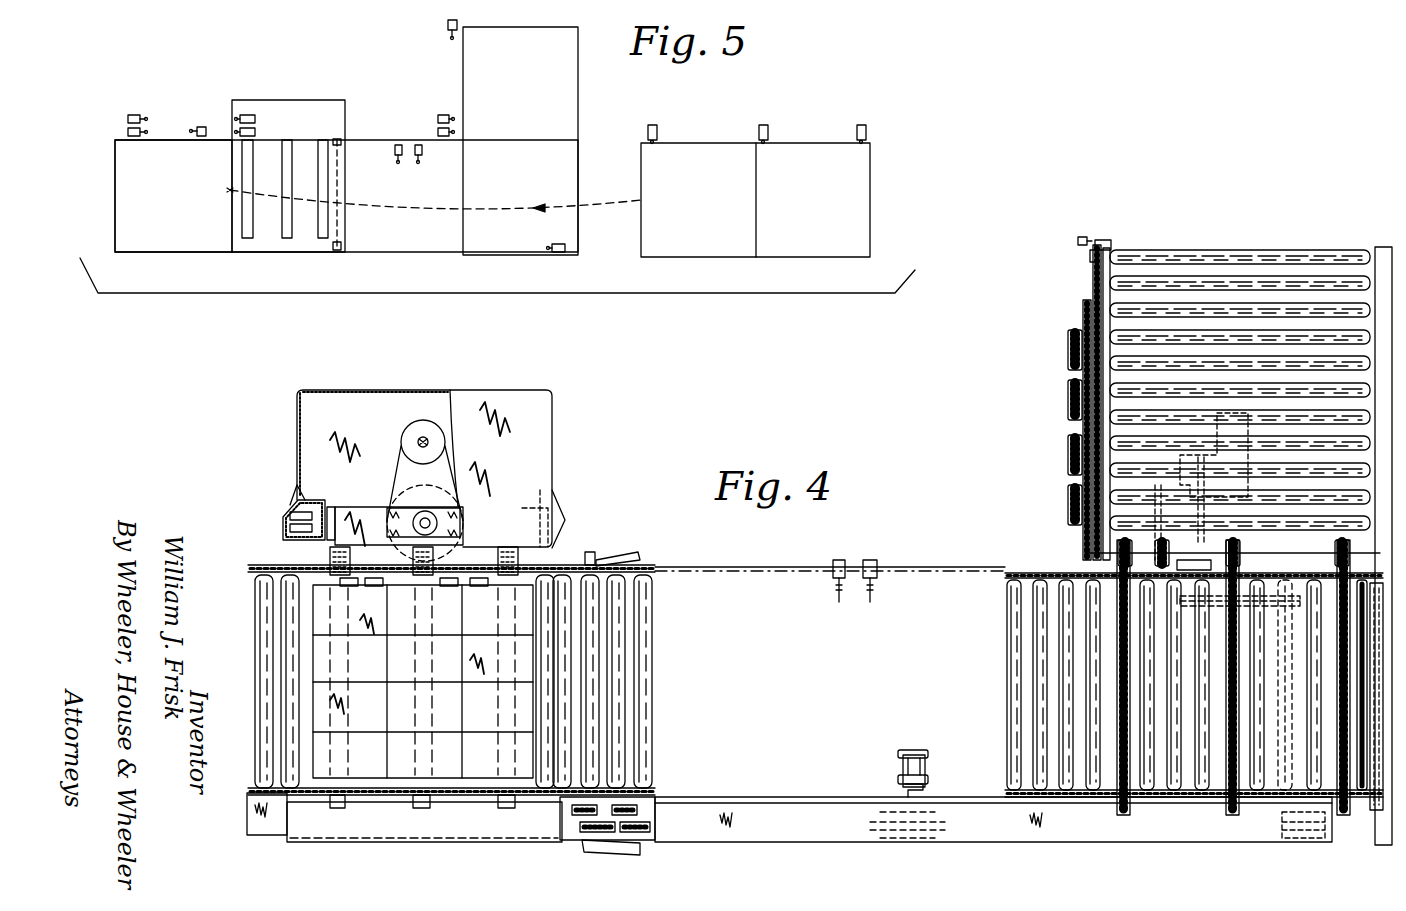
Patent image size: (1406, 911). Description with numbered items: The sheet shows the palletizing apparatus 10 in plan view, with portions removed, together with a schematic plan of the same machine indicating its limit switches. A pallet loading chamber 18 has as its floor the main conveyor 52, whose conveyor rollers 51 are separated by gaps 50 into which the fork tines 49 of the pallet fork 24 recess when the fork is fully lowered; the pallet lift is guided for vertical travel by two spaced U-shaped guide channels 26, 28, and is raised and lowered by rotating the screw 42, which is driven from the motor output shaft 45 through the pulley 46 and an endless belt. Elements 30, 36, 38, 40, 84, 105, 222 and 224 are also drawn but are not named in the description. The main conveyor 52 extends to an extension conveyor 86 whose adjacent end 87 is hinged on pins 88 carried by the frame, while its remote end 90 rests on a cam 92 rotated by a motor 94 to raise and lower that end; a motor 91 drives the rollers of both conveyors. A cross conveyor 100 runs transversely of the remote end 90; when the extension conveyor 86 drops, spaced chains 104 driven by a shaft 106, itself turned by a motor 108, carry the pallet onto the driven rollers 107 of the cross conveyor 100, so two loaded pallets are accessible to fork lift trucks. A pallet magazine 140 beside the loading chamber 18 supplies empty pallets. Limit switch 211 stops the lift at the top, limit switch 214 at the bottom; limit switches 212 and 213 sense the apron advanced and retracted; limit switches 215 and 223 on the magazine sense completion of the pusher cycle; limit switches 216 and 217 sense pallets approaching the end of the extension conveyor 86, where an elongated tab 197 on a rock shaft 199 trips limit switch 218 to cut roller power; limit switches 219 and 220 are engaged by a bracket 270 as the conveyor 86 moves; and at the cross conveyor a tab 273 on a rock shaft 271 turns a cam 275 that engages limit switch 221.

In FIG. 4, the palletizing apparatus 10 is at (262, 458).
In FIG. 5, the pallet loading chamber 18 is at (275, 238).
In FIG. 4, the pallet fork 24 is at (320, 700).
In FIG. 4, the U-shaped guide channel 26 is at (312, 545).
In FIG. 4, the U-shaped guide channel 28 is at (553, 490).
In FIG. 4, the hopper inlet 30 is at (304, 490).
In FIG. 4, the hopper 36 is at (300, 532).
In FIG. 4, the gate block 38 is at (331, 507).
In FIG. 4, the hopper outlet 40 is at (300, 507).
In FIG. 4, the screw 42 is at (425, 510).
In FIG. 4, the output shaft 45 is at (418, 442).
In FIG. 4, the pulley 46 is at (420, 428).
In FIG. 5, the fork tines 49 is at (248, 238).
In FIG. 4, the fork tines 49 is at (337, 808).
In FIG. 4, the gaps 50 is at (495, 588).
In FIG. 4, the conveyor rollers 51 is at (288, 605).
In FIG. 4, the main conveyor 52 is at (280, 639).
In FIG. 4, the stop plate 84 is at (612, 562).
In FIG. 5, the extension conveyor 86 is at (455, 238).
In FIG. 4, the extension conveyor 86 is at (632, 592).
In FIG. 4, the adjacent end 87 is at (595, 626).
In FIG. 4, the pins 88 is at (591, 550).
In FIG. 4, the remote end 90 is at (1303, 825).
In FIG. 4, the motor 91 is at (920, 751).
In FIG. 4, the cam 92 is at (1290, 576).
In FIG. 4, the motor 94 is at (1190, 560).
In FIG. 5, the cross conveyor 100 is at (557, 38).
In FIG. 4, the cross conveyor 100 is at (1213, 270).
In FIG. 4, the belts or chains 104 is at (1080, 574).
In FIG. 4, the lift chain 105 is at (1070, 458).
In FIG. 4, the shaft 106 is at (1085, 548).
In FIG. 4, the rollers 107 is at (1070, 496).
In FIG. 4, the motor 108 is at (1231, 413).
In FIG. 5, the pallet magazine 140 is at (160, 236).
In FIG. 4, the elongated tab 197 is at (1347, 830).
In FIG. 4, the rock shaft 199 is at (1360, 812).
In FIG. 5, the limit switch 211 is at (247, 113).
In FIG. 5, the limit switch 212 is at (765, 124).
In FIG. 5, the limit switch 213 is at (870, 112).
In FIG. 5, the limit switch 214 is at (257, 133).
In FIG. 5, the limit switch 215 is at (127, 132).
In FIG. 5, the limit switch 216 is at (395, 148).
In FIG. 4, the limit switch 216 is at (835, 560).
In FIG. 5, the limit switch 217 is at (418, 144).
In FIG. 4, the limit switch 217 is at (880, 560).
In FIG. 5, the limit switch 218 is at (556, 256).
In FIG. 4, the limit switch 218 is at (1345, 822).
In FIG. 5, the limit switch 219 is at (444, 114).
In FIG. 5, the limit switch 220 is at (441, 137).
In FIG. 5, the limit switch 221 is at (446, 25).
In FIG. 4, the limit switch 221 is at (1090, 222).
In FIG. 5, the sensor 222 is at (206, 114).
In FIG. 5, the limit switch 223 is at (127, 118).
In FIG. 5, the sensor 224 is at (662, 112).
In FIG. 5, the bracket 270 is at (337, 250).
In FIG. 4, the rock shaft 271 is at (1282, 248).
In FIG. 4, the tab 273 is at (1346, 256).
In FIG. 4, the cam 275 is at (1090, 254).